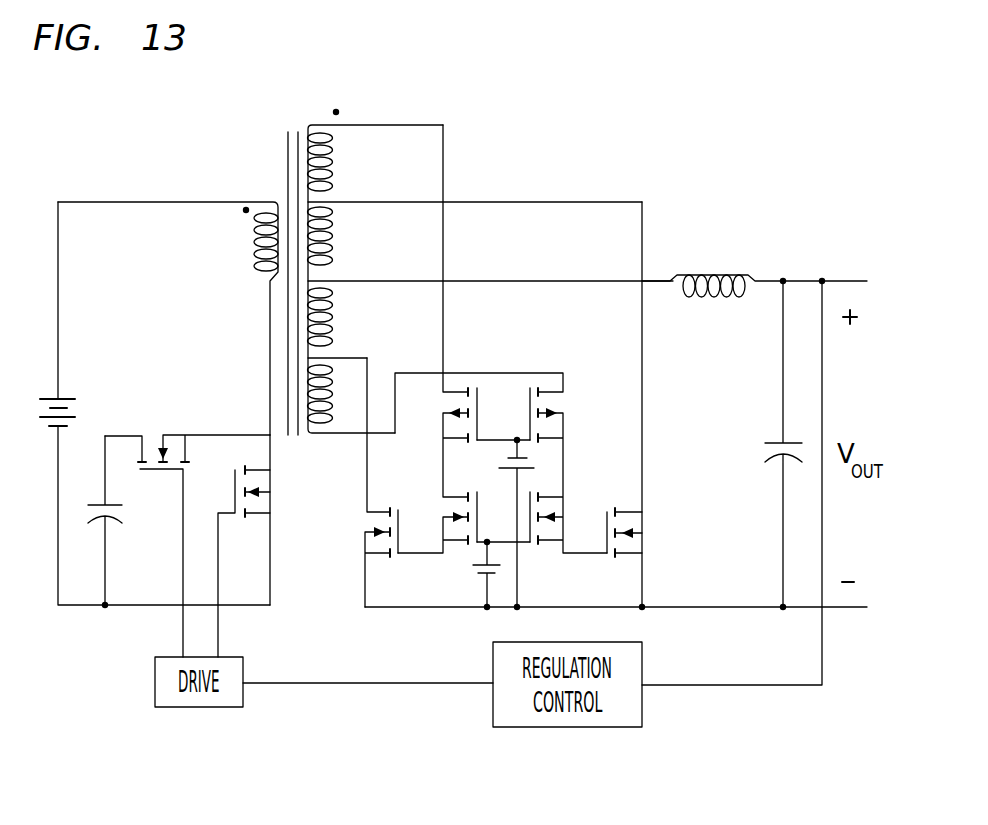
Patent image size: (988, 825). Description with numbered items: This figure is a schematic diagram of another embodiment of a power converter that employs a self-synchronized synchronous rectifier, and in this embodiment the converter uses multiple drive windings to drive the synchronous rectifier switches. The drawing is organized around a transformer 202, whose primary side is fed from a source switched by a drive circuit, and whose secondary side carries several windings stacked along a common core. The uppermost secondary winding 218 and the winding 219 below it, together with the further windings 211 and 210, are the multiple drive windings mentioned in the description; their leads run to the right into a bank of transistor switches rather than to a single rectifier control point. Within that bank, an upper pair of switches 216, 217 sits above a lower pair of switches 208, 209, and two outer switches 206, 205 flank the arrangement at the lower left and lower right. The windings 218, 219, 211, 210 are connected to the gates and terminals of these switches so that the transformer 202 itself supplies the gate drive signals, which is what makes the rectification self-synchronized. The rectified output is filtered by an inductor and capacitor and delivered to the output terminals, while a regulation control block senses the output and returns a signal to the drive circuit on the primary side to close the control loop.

The transformer 202 is at (284, 148).
The secondary winding 218 is at (333, 170).
The secondary winding 219 is at (333, 247).
The secondary winding 211 is at (333, 317).
The secondary winding 210 is at (333, 378).
The switch 216 is at (438, 436).
The switch 217 is at (567, 423).
The switch 208 is at (440, 503).
The switch 209 is at (568, 500).
The switch 206 is at (362, 540).
The switch 205 is at (645, 542).